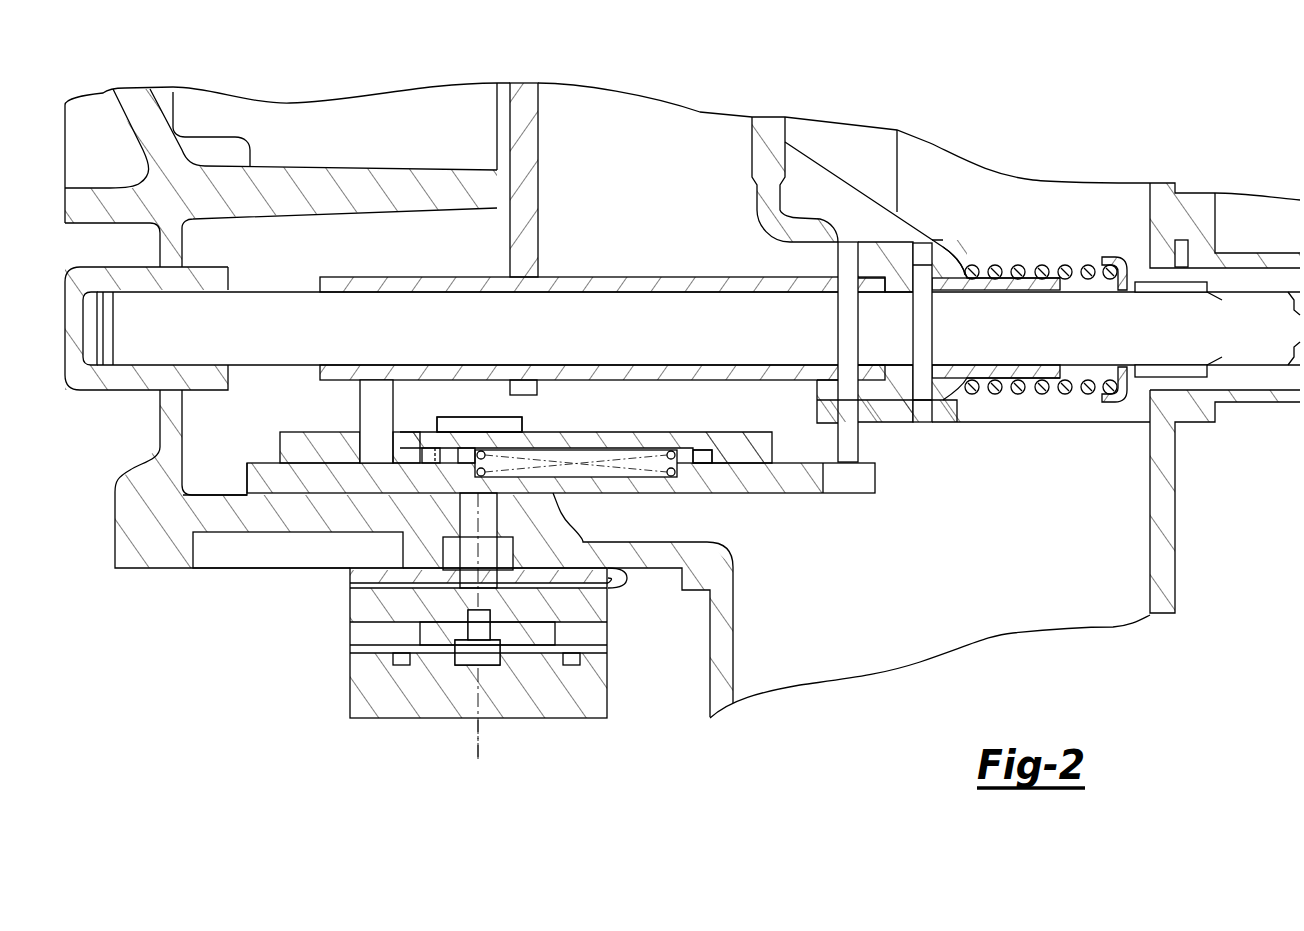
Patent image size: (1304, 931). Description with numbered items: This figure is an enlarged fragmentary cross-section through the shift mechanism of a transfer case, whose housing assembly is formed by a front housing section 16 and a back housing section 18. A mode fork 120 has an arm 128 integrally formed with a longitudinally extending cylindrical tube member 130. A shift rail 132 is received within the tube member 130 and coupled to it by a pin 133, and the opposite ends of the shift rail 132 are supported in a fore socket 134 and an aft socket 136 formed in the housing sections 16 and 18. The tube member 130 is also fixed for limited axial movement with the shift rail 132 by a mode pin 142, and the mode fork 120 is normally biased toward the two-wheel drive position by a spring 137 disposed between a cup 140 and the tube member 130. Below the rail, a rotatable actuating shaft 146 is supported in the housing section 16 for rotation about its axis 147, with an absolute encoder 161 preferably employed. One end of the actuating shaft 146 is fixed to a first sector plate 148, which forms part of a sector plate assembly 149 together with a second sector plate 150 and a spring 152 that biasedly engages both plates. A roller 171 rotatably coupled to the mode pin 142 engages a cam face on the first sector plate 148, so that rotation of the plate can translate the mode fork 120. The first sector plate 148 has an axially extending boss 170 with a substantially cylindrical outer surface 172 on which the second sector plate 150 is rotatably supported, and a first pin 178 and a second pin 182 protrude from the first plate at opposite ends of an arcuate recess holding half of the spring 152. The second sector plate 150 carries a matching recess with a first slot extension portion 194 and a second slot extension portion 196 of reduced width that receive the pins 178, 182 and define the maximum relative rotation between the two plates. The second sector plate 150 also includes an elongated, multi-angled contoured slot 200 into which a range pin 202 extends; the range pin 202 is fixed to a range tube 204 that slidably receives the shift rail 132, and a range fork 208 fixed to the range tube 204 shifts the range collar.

The front housing section 16 is at (194, 522).
The back housing section 18 is at (1255, 398).
The mode fork 120 is at (782, 162).
The arm 128 is at (760, 241).
The tube member 130 is at (1007, 265).
The shift rail 132 is at (1067, 305).
The pin 133 is at (930, 310).
The fore socket 134 is at (93, 387).
The aft socket 136 is at (1250, 290).
The spring 137 is at (1065, 396).
The cup 140 is at (1112, 405).
The mode pin 142 is at (840, 340).
The actuating shaft 146 is at (490, 548).
The axis 147 is at (480, 740).
The first sector plate 148 is at (775, 468).
The sector plate assembly 149 is at (228, 466).
The second sector plate 150 is at (597, 430).
The spring 152 is at (672, 447).
The absolute encoder 161 is at (400, 712).
The boss 170 is at (478, 415).
The roller 171 is at (868, 480).
The outer surface 172 is at (450, 450).
The first pin 178 is at (455, 430).
The second pin 182 is at (712, 432).
The first slot extension portion 194 is at (431, 449).
The second slot extension portion 196 is at (705, 462).
The slot 200 is at (355, 435).
The range pin 202 is at (355, 400).
The range tube 204 is at (565, 273).
The range fork 208 is at (524, 92).